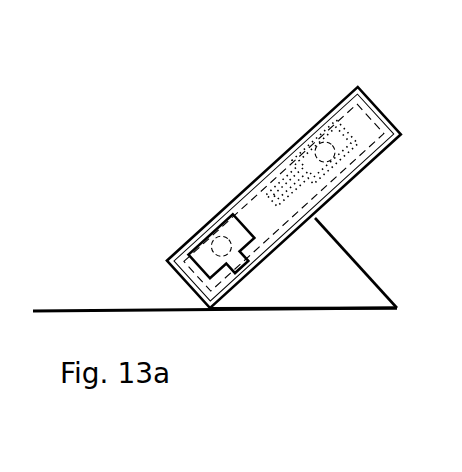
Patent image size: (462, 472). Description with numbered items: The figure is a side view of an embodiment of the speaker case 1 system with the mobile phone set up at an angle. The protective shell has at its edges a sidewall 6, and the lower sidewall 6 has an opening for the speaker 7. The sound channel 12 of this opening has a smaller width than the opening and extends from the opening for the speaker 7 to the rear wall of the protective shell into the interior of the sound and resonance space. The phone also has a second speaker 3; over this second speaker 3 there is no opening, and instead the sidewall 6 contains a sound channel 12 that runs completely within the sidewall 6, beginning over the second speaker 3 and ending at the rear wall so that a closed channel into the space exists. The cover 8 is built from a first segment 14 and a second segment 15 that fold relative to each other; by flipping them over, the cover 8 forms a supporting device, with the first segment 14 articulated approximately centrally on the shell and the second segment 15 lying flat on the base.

The speaker case 1 is at (153, 130).
The second speaker 3 is at (310, 132).
The sidewall 6 is at (355, 108).
The speaker 7 is at (231, 213).
The cover 8 is at (101, 309).
The sound channel 12 is at (345, 178).
The first segment 14 is at (372, 281).
The second segment 15 is at (308, 311).